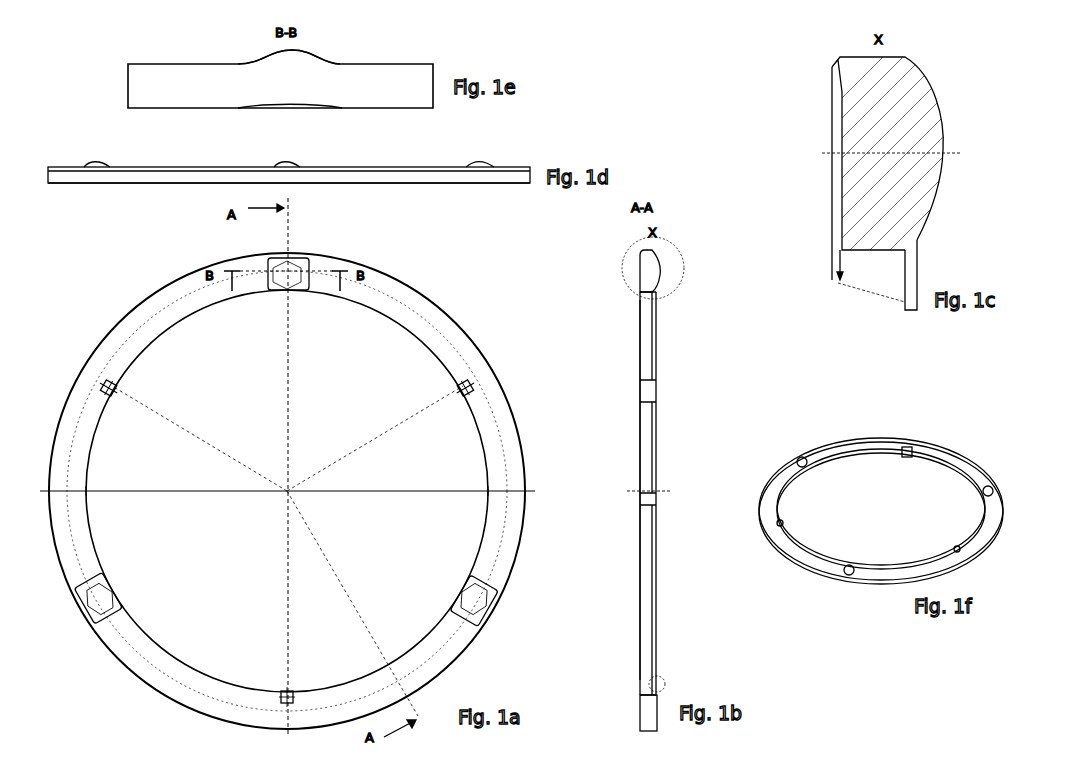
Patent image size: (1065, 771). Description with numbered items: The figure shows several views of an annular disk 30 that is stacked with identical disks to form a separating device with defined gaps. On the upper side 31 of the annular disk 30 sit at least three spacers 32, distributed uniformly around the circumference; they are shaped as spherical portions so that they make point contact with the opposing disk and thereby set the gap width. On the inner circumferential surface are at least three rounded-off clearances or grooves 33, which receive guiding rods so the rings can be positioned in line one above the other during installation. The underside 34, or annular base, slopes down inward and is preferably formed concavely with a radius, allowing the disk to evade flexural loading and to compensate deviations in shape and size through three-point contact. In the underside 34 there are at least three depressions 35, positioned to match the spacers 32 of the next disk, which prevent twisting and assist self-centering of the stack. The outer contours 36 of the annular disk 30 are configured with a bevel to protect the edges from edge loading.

In FIG. 1F, the annular disk 30 is at (898, 502).
In FIG. 1D, the upper side 31 is at (362, 167).
In FIG. 1A, the upper side 31 is at (287, 491).
In FIG. 1B, the upper side 31 is at (657, 350).
In FIG. 1F, the upper side 31 is at (975, 535).
In FIG. 1E, the spacer 32 is at (314, 53).
In FIG. 1D, the spacer 32 is at (100, 162).
In FIG. 1A, the spacer 32 is at (298, 256).
In FIG. 1B, the spacer 32 is at (653, 268).
In FIG. 1C, the spacer 32 is at (928, 198).
In FIG. 1F, the spacer 32 is at (802, 458).
In FIG. 1A, the clearance/groove 33 is at (118, 388).
In FIG. 1F, the clearance/groove 33 is at (907, 458).
In FIG. 1E, the underside 34 is at (198, 108).
In FIG. 1D, the underside 34 is at (170, 184).
In FIG. 1B, the underside 34 is at (640, 318).
In FIG. 1E, the depression 35 is at (285, 108).
In FIG. 1B, the depression 35 is at (640, 672).
In FIG. 1C, the outer contour 36 is at (838, 60).